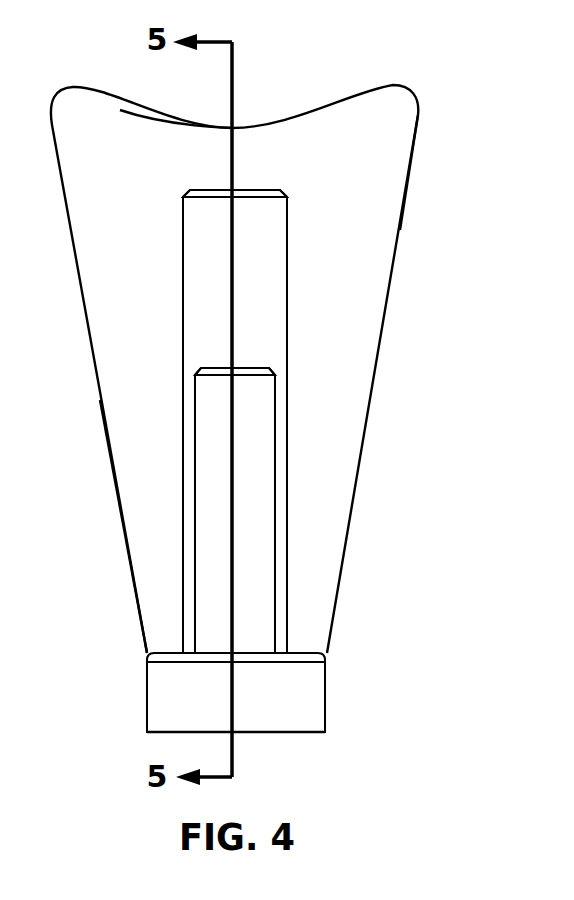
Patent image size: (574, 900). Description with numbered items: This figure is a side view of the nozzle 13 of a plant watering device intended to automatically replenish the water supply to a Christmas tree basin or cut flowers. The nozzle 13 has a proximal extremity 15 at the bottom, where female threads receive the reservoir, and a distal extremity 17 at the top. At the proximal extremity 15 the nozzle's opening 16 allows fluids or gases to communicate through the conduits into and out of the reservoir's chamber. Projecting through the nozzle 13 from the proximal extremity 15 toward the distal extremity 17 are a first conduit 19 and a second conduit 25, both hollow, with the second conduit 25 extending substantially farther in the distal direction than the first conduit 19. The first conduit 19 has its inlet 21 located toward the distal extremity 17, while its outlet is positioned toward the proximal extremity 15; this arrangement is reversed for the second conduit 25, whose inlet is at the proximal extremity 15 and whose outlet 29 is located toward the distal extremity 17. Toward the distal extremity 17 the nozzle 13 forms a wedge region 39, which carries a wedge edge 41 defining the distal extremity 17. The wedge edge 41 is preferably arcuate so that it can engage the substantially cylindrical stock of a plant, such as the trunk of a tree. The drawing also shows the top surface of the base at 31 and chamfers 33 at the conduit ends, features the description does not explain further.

The nozzle 13 is at (386, 458).
The proximal extremity 15 is at (147, 728).
The nozzle's opening 16 is at (290, 733).
The distal extremity 17 is at (418, 97).
The first conduit 19 is at (213, 480).
The inlet of the first conduit 21 is at (205, 368).
The second conduit 25 is at (200, 266).
The outlet of the second conduit 29 is at (192, 190).
The top surface of base 31 is at (212, 652).
The chamfer 33 is at (250, 188).
The wedge region 39 is at (373, 193).
The wedge edge 41 is at (270, 127).